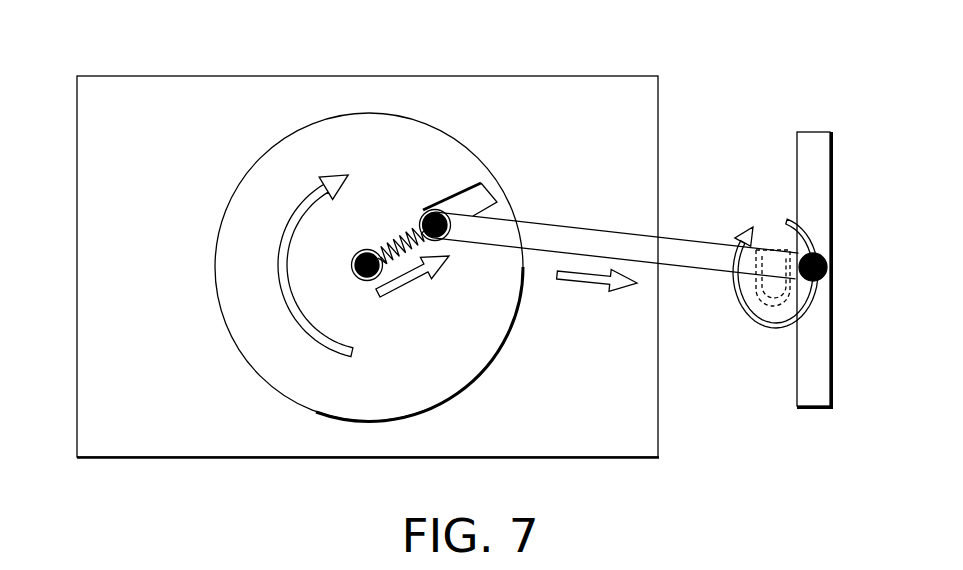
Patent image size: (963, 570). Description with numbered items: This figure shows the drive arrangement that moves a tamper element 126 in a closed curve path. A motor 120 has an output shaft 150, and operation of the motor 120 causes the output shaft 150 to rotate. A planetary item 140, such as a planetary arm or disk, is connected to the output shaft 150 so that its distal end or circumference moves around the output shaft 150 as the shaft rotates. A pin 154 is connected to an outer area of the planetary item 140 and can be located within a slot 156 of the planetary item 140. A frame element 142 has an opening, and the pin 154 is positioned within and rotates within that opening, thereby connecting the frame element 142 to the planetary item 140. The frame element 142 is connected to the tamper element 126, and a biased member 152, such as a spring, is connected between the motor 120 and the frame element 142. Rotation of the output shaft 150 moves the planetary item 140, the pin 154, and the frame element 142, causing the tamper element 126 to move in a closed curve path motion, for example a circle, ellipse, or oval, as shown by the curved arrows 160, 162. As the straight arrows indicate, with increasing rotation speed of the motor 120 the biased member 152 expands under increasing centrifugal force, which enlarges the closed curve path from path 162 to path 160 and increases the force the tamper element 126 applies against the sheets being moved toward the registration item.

The motor 120 is at (77, 197).
The tamper element 126 is at (813, 131).
The planetary item 140 is at (255, 378).
The frame element 142 is at (710, 282).
The output shaft 150 is at (343, 260).
The biased member 152 is at (374, 226).
The pin 154 is at (435, 205).
The slot 156 is at (464, 207).
The closed curve path motion 160 is at (767, 333).
The closed curve path motion 162 is at (778, 246).